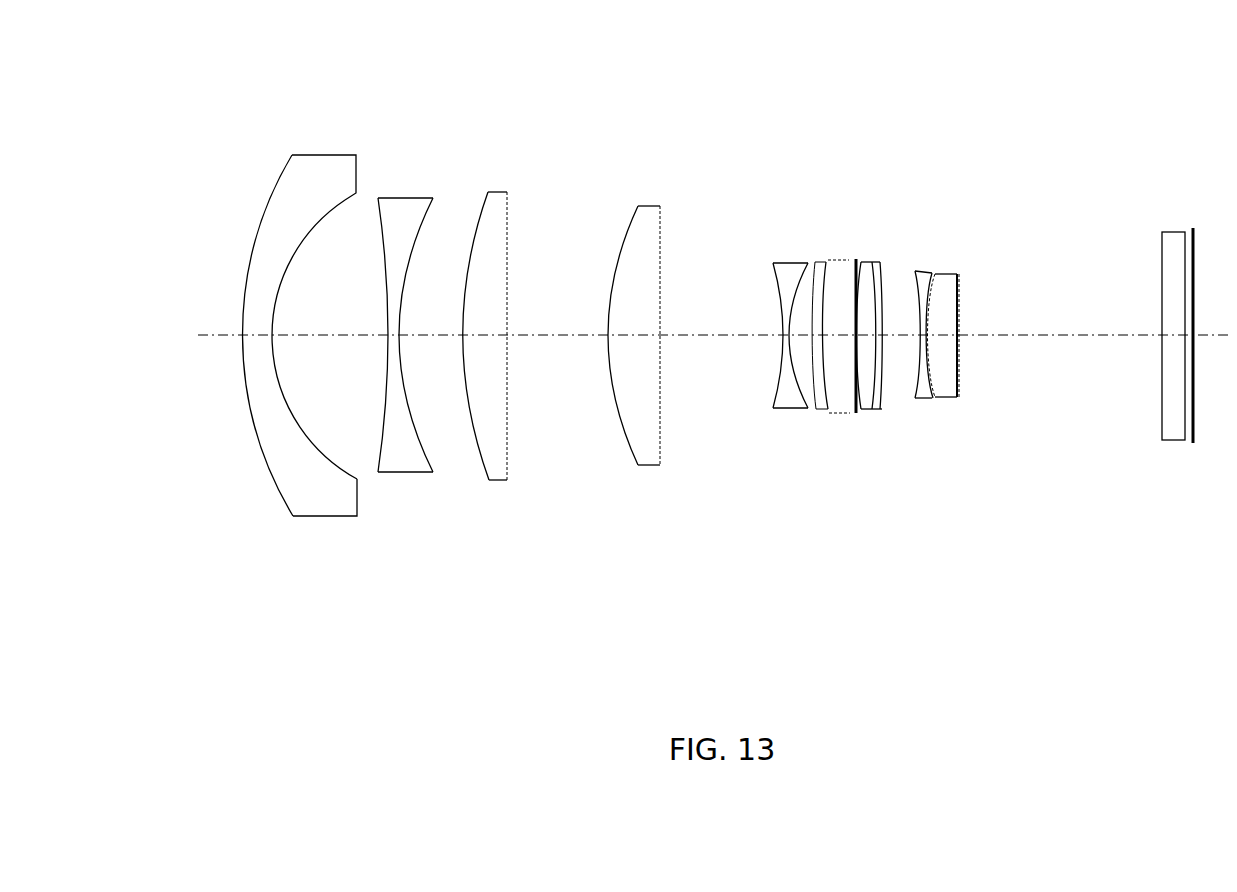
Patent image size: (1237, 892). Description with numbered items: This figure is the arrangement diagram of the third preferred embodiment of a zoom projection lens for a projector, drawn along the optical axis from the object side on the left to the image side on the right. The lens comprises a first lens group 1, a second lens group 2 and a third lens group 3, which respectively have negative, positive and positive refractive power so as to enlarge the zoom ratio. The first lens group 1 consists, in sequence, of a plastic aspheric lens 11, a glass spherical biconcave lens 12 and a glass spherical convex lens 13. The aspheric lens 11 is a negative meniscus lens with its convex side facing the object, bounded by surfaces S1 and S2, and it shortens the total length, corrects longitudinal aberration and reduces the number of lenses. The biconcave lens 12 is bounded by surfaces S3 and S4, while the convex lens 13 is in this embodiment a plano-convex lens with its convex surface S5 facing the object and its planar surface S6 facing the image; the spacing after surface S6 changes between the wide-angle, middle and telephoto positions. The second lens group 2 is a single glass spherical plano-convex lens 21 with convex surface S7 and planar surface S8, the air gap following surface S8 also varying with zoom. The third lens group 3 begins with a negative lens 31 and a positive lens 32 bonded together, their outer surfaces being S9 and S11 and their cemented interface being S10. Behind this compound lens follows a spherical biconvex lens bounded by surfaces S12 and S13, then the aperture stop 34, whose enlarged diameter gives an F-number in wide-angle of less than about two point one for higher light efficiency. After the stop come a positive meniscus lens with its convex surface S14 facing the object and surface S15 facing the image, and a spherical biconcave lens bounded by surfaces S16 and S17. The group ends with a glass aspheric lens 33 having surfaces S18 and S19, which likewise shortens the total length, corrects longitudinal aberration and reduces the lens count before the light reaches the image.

The first lens group 1 is at (507, 628).
The second lens group 2 is at (661, 628).
The third lens group 3 is at (958, 628).
The plastic aspheric lens 11 is at (323, 517).
The glass spherical biconcave lens 12 is at (402, 473).
The glass spherical convex lens 13 is at (497, 481).
The glass spherical convex lens 21 is at (645, 467).
The negative lens 31 is at (786, 409).
The positive lens 32 is at (815, 411).
The glass aspheric lens 33 is at (945, 399).
The aperture stop 34 is at (858, 414).
The surface S1 is at (277, 178).
The surface S2 is at (342, 220).
The surface S3 is at (381, 216).
The surface S4 is at (430, 214).
The surface S5 is at (482, 216).
The surface S6 is at (509, 216).
The surface S7 is at (634, 215).
The surface S8 is at (661, 215).
The surface S9 is at (775, 276).
The surface S10 is at (795, 262).
The surface S11 is at (815, 262).
The surface S12 is at (826, 260).
The surface S13 is at (853, 260).
The surface S14 is at (858, 262).
The surface S15 is at (880, 262).
The surface S16 is at (914, 280).
The surface S17 is at (932, 273).
The surface S18 is at (958, 280).
The surface S19 is at (958, 297).